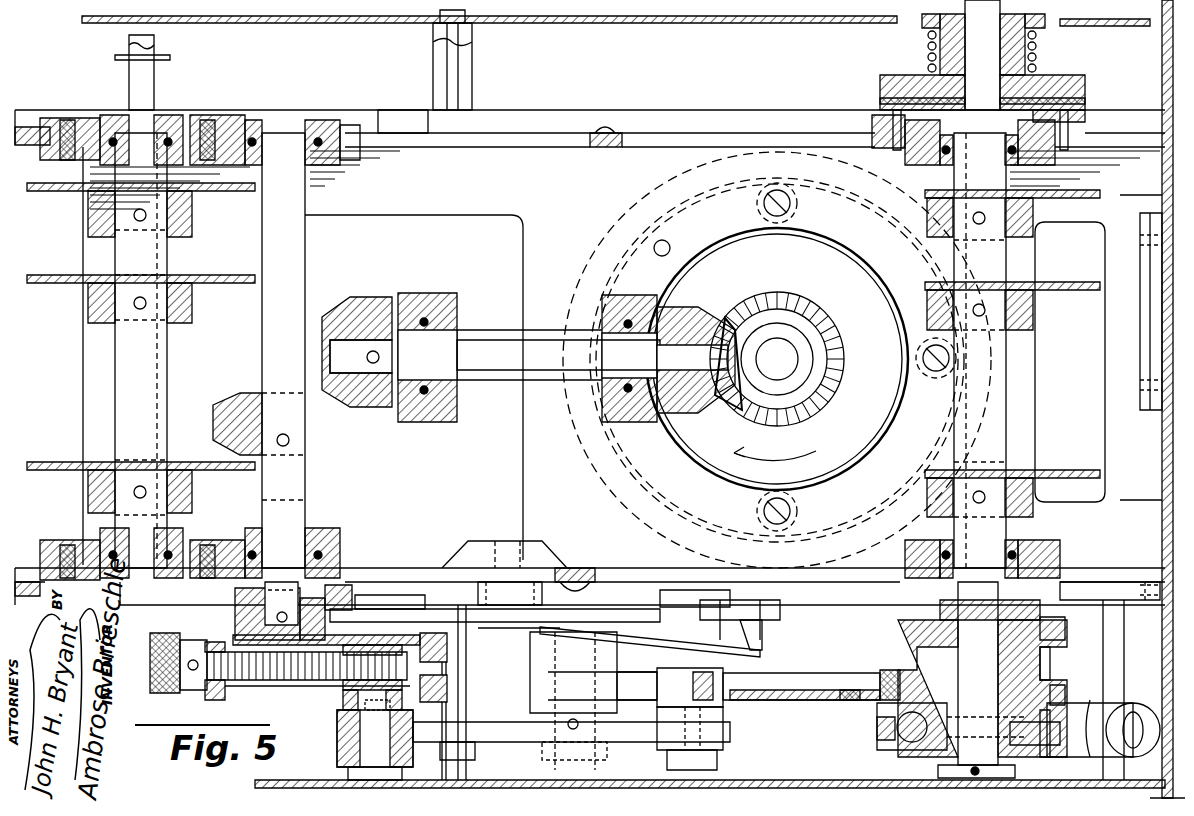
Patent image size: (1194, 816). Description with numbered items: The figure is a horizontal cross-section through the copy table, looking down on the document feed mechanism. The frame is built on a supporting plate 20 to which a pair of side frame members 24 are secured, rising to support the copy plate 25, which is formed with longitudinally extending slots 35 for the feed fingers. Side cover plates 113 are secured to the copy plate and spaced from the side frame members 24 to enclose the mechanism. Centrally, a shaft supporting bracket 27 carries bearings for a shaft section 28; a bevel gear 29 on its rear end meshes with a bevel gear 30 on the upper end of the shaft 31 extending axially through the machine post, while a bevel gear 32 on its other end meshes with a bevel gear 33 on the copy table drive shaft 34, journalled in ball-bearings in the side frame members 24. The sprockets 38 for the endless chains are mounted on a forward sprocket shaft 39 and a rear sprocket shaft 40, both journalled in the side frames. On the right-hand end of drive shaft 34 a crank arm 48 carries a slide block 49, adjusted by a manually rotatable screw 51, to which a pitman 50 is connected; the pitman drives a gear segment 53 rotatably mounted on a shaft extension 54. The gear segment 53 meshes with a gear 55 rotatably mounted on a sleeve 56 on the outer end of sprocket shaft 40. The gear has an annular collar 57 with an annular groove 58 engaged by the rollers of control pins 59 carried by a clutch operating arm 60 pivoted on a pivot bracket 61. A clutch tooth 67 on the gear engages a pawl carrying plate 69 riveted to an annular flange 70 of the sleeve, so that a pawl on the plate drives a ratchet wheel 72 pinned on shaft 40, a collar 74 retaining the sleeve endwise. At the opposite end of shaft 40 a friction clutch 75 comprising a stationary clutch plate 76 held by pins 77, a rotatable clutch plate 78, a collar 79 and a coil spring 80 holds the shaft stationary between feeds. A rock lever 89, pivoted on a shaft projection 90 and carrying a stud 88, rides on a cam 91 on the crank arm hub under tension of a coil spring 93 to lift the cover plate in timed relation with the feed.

The supporting plate 20 is at (83, 421).
The side frame members 24 is at (645, 112).
The copy plate 25 is at (1162, 432).
The shaft supporting bracket 27 is at (444, 302).
The shaft section 28 is at (558, 355).
The bevel gear 29 is at (735, 312).
The bevel gear 30 is at (805, 310).
The shaft 31 is at (779, 350).
The bevel gear 32 is at (348, 300).
The bevel gear 33 is at (230, 400).
The copy table drive shaft 34 is at (283, 350).
The longitudinally extending slots 35 is at (1162, 198).
The sprockets 38 is at (75, 193).
The sprocket shaft 39 is at (142, 301).
The sprocket shaft 40 is at (980, 382).
The crank arm 48 is at (215, 693).
The slide block 49 is at (345, 700).
The pitman 50 is at (571, 741).
The manually rotatable screw 51 is at (300, 670).
The gear segment 53 is at (870, 700).
The shaft extension 54 is at (550, 660).
The gear 55 is at (1065, 690).
The sleeve 56 is at (1005, 760).
The annular collar 57 is at (1080, 760).
The annular groove 58 is at (1010, 726).
The control pins 59 is at (880, 735).
The clutch operating arm 60 is at (1098, 757).
The pivot bracket 61 is at (1090, 600).
The clutch tooth 67 is at (890, 670).
The pawl carrying plate 69 is at (1050, 668).
The annular flange 70 is at (958, 644).
The ratchet wheel 72 is at (1065, 638).
The collar 74 is at (938, 770).
The friction clutch 75 is at (880, 78).
The stationary clutch plate 76 is at (1085, 112).
The pins 77 is at (872, 120).
The rotatable clutch plate 78 is at (1062, 75).
The collar 79 is at (930, 25).
The coil spring 80 is at (1040, 42).
The stud 88 is at (780, 716).
The rock lever 89 is at (380, 609).
The shaft projection 90 is at (488, 628).
The cam 91 is at (340, 582).
The coil spring 93 is at (740, 640).
The side cover plates 113 is at (648, 23).